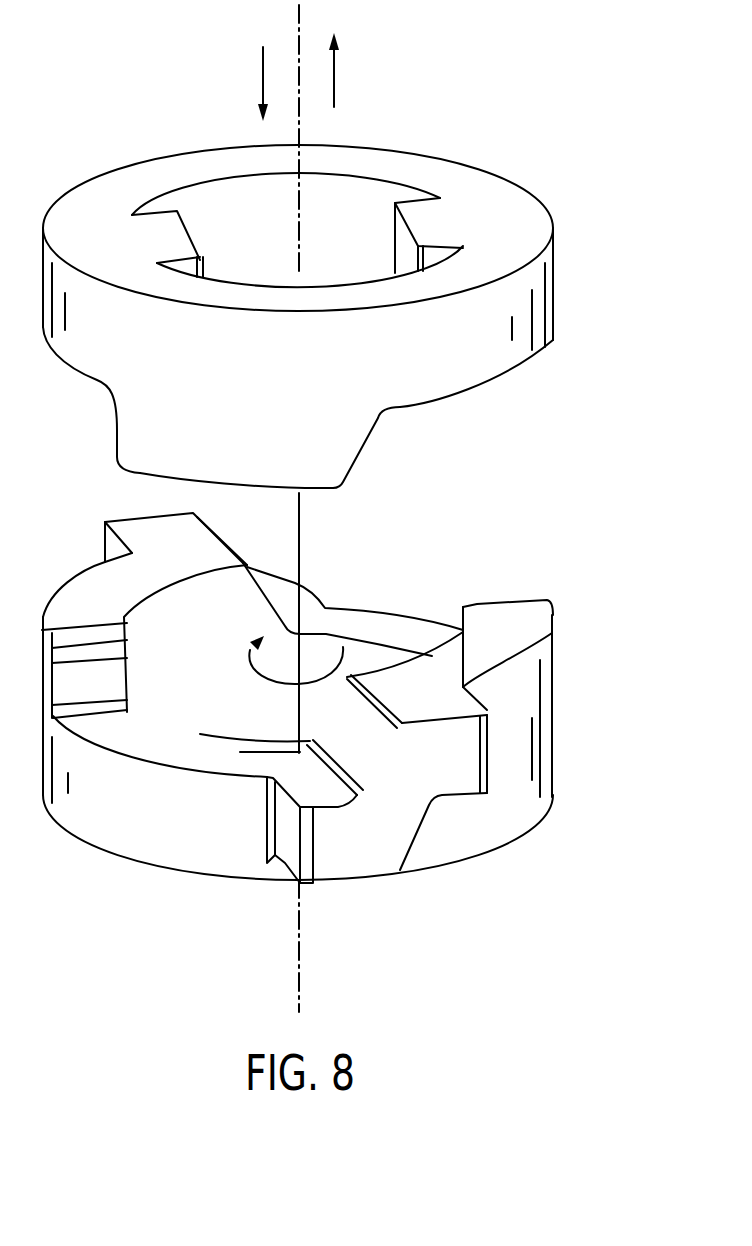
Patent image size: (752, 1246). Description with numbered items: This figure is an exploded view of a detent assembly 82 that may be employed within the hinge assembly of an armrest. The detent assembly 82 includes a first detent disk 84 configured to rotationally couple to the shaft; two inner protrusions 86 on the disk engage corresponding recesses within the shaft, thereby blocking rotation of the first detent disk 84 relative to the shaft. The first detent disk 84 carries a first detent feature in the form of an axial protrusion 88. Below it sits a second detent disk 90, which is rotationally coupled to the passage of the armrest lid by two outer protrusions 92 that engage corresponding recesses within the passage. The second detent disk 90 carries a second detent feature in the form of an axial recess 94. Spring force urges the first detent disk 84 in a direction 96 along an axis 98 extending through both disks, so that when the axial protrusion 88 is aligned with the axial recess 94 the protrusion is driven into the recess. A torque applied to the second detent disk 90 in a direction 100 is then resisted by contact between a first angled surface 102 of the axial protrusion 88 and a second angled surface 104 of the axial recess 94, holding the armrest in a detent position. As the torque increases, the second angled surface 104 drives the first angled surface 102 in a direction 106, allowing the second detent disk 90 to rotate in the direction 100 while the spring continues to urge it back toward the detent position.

The detent assembly 82 is at (548, 495).
The first detent disk 84 is at (553, 280).
The notch 86 is at (190, 233).
The axial protrusion 88 is at (317, 493).
The second detent disk 90 is at (553, 707).
The outer protrusions 92 is at (350, 882).
The axial recess 94 is at (153, 743).
The direction 96 is at (263, 78).
The axis 98 is at (300, 253).
The direction 100 is at (268, 678).
The first angled surface 102 is at (365, 447).
The second angled surface 104 is at (373, 743).
The direction 106 is at (334, 78).